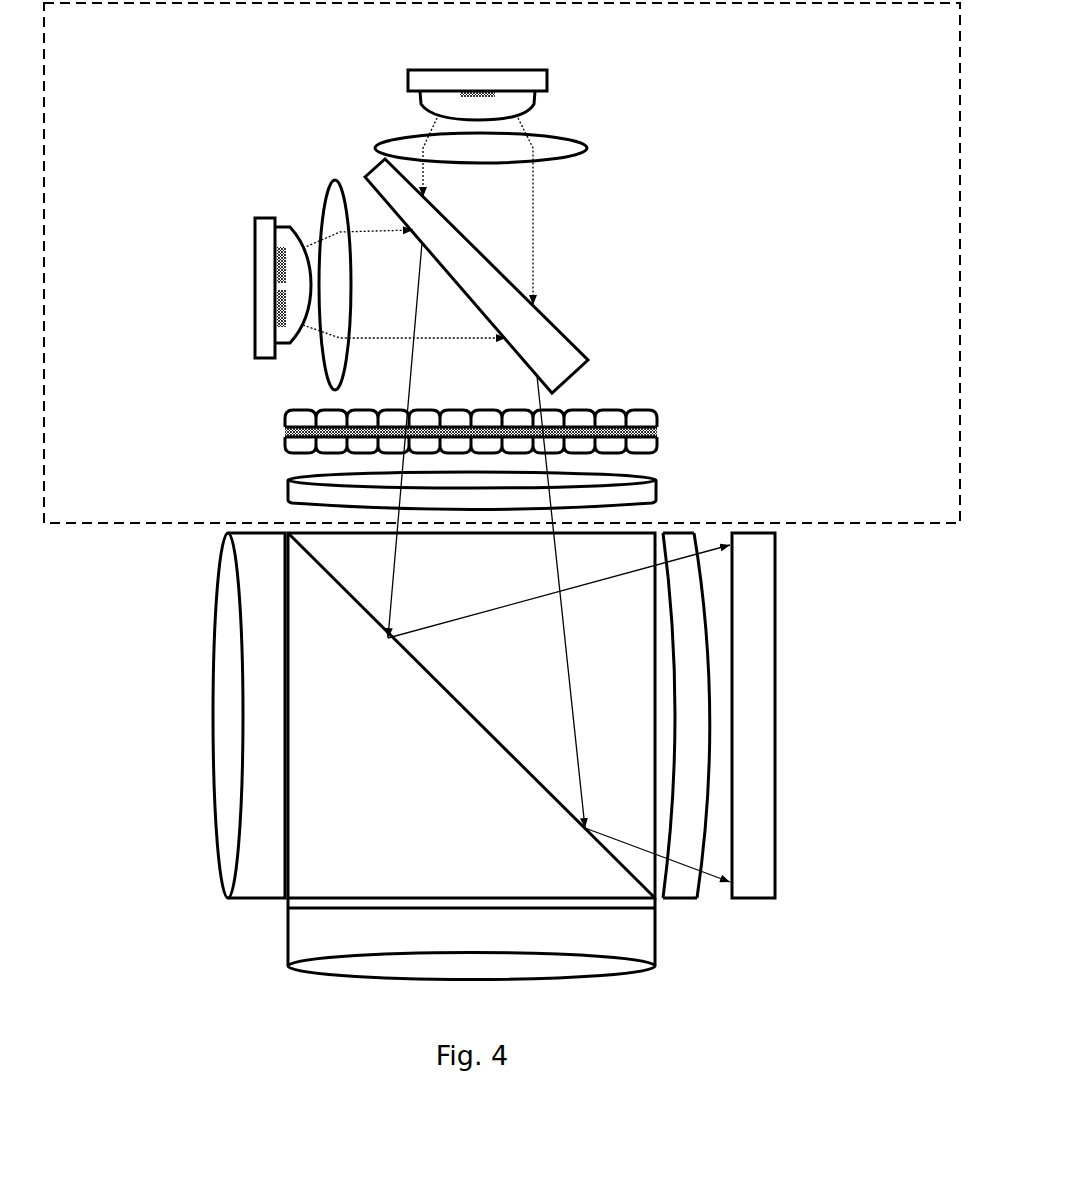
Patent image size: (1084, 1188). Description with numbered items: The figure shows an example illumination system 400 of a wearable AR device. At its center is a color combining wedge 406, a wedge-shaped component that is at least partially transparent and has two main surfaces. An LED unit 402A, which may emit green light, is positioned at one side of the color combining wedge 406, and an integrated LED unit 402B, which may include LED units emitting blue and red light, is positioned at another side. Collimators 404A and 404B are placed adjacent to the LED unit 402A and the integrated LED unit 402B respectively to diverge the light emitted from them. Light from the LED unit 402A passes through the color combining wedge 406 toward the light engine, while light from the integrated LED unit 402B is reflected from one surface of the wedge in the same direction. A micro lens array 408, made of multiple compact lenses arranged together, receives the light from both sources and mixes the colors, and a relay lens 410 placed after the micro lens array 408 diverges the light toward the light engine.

The illumination system 400 is at (502, 263).
The LED unit 402A is at (500, 70).
The integrated LED unit 402B is at (253, 275).
The collimator 404A is at (557, 135).
The collimator 404B is at (325, 195).
The color combining wedge 406 is at (575, 343).
The micro lens array 408 is at (655, 413).
The relay lens 410 is at (657, 495).